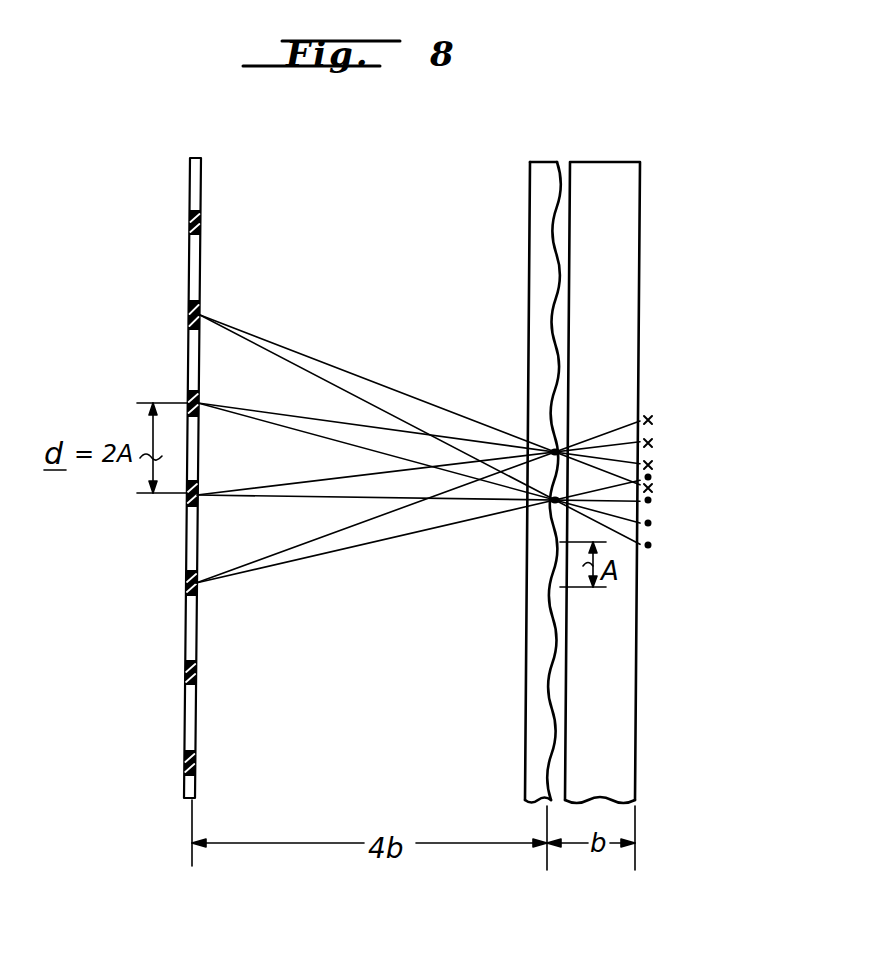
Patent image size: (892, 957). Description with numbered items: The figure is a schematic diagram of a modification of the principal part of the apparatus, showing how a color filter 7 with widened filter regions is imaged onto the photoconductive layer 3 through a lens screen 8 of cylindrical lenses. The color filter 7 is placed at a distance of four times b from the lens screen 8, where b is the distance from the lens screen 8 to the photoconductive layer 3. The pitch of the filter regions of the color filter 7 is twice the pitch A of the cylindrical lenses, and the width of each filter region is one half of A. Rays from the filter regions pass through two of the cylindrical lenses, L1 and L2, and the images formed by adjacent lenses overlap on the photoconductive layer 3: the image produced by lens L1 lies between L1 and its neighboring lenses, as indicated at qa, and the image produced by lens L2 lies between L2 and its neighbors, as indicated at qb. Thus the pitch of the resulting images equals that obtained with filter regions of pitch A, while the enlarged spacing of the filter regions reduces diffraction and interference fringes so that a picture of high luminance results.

The color filter 7 is at (196, 158).
The lens screen 8 is at (540, 170).
The photoconductive layer 3 is at (638, 195).
The cylindrical lens L1 is at (548, 505).
The cylindrical lens L2 is at (548, 445).
The image produced by cylindrical lens L1 qa is at (676, 413).
The image produced by cylindrical lens L2 qb is at (660, 472).